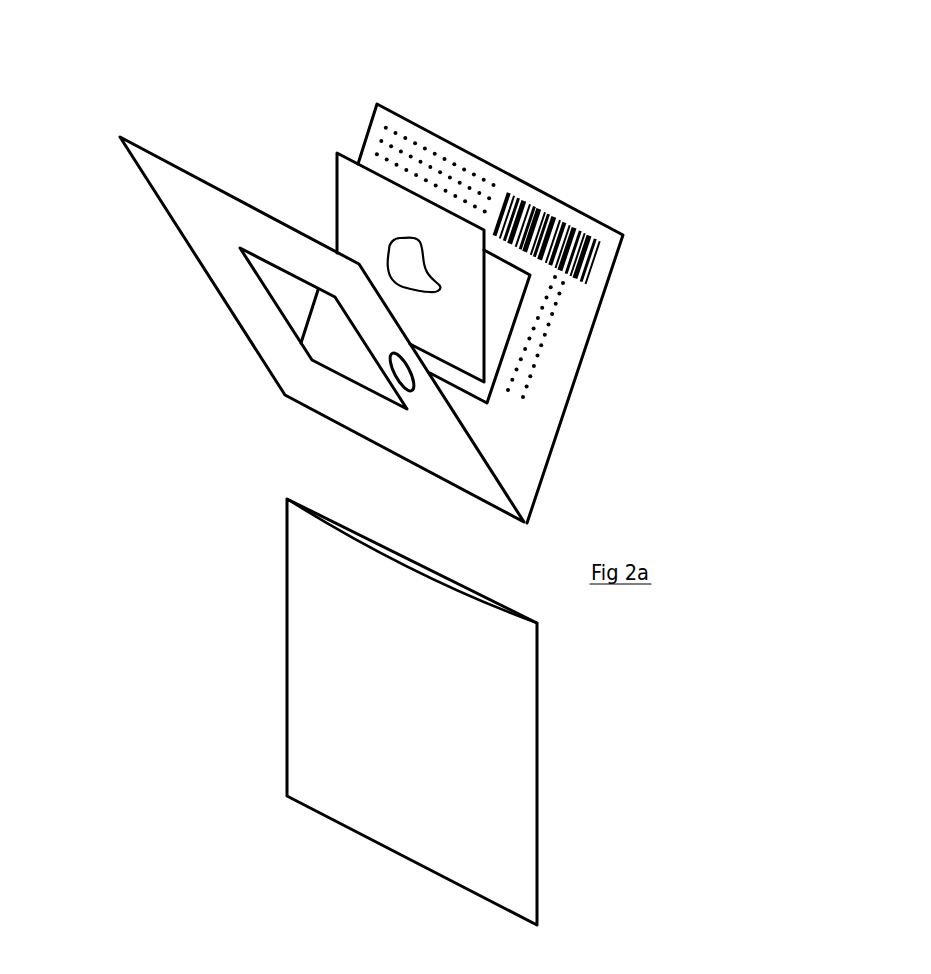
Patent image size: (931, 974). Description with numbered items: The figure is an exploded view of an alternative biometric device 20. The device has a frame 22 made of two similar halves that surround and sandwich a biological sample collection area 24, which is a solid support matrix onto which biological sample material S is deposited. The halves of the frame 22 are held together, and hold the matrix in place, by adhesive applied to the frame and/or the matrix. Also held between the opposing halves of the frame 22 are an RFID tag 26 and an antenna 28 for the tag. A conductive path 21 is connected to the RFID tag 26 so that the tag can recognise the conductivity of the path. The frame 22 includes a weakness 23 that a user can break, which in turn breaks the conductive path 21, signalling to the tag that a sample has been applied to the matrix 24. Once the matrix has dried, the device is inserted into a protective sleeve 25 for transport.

The biometric device 20 is at (240, 88).
The conductive path 21 is at (543, 349).
The frame 22 is at (151, 187).
The weakness 23 is at (404, 368).
The biological sample collection area 24 is at (373, 212).
The protective sleeve 25 is at (412, 712).
The RFID tag 26 is at (557, 224).
The antenna 28 is at (445, 180).